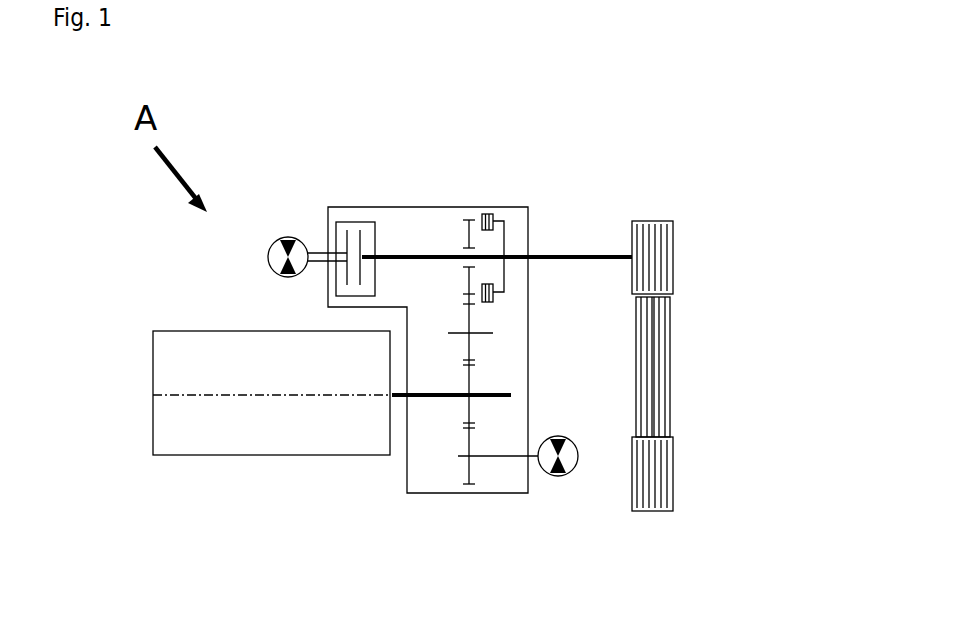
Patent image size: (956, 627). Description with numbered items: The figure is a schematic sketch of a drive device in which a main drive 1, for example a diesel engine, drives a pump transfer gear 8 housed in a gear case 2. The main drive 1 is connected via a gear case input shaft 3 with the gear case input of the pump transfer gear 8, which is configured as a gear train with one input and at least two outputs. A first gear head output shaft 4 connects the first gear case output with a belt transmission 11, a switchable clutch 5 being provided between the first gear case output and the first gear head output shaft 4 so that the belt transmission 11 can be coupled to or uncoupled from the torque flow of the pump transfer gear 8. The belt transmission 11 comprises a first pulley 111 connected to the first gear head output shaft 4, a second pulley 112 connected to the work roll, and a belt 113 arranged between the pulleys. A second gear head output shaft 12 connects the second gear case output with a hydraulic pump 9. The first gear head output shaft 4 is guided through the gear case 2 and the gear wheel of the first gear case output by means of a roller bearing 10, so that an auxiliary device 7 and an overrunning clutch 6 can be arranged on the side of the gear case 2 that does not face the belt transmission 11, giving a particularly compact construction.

The main drive 1 is at (225, 457).
The gear case 2 is at (435, 495).
The gear case input shaft 3 is at (423, 398).
The first gear head output shaft 4 is at (560, 254).
The switchable clutch 5 is at (502, 207).
The overrunning clutch 6 is at (356, 221).
The auxiliary device 7 is at (284, 237).
The pump transfer gear 8 is at (477, 317).
The hydraulic pump 9 is at (575, 473).
The roller bearing 10 is at (460, 242).
The belt transmission 11 is at (721, 331).
The first pulley 111 is at (676, 236).
The second pulley 112 is at (675, 495).
The belt 113 is at (672, 402).
The second gear head output shaft 12 is at (502, 463).